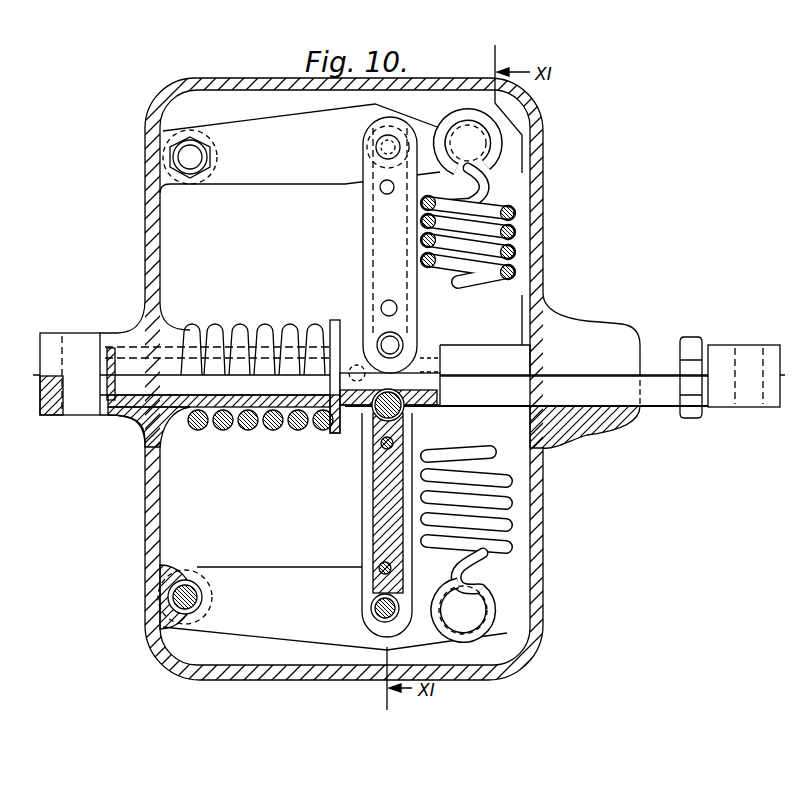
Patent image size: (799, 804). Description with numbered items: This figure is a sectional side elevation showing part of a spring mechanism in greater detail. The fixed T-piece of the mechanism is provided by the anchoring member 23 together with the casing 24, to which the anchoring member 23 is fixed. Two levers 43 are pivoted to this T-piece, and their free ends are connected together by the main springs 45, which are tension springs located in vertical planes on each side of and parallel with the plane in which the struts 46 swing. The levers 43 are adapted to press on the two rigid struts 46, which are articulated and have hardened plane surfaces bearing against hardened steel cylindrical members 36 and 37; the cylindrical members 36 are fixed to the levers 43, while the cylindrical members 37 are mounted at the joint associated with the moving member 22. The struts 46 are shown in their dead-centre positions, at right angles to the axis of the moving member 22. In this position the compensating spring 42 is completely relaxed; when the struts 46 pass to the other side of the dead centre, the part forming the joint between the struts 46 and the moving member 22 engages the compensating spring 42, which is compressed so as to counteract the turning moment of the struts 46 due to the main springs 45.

The moving member 22 is at (760, 387).
The anchoring member 23 is at (43, 393).
The casing 24 is at (220, 670).
The cylindrical members 36 is at (388, 140).
The cylindrical members 37 is at (395, 348).
The compensating spring 42 is at (322, 433).
The levers 43 is at (340, 147).
The main springs 45 is at (470, 527).
The struts 46 is at (390, 250).